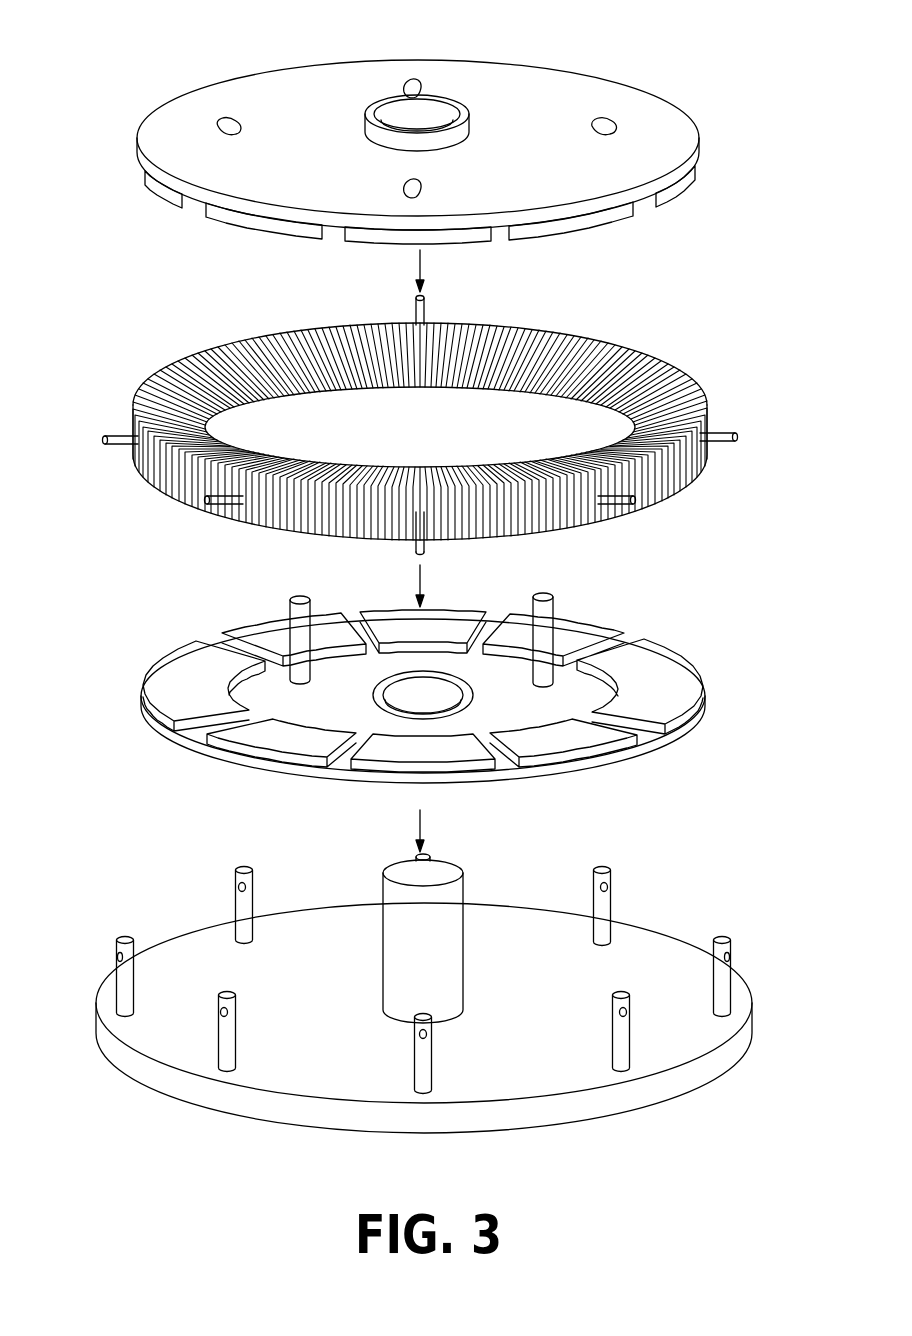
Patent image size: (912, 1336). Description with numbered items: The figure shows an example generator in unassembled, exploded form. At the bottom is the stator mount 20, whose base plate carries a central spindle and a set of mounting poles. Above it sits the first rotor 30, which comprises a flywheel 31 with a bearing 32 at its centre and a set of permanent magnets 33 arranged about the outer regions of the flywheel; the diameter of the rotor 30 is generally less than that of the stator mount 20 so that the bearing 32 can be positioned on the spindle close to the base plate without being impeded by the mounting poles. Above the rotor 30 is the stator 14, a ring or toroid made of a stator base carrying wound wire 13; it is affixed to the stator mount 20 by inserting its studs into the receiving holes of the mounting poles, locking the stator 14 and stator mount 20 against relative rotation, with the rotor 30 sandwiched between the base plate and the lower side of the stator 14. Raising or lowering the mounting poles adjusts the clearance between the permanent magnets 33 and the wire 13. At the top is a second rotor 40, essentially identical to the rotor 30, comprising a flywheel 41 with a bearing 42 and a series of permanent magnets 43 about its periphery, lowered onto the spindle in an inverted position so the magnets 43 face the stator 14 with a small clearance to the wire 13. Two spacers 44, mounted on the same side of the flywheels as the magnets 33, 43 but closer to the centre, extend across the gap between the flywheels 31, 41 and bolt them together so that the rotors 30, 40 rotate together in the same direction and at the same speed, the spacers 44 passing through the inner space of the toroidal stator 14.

The wound wire 13 is at (521, 330).
The stator 14 is at (424, 409).
The stator mount 20 is at (660, 895).
The rotor 30 is at (433, 690).
The flywheel 31 is at (525, 708).
The bearing 32 is at (160, 702).
The permanent magnets 33 is at (385, 748).
The second rotor 40 is at (443, 151).
The flywheel 41 is at (541, 130).
The bearing 42 is at (368, 124).
The permanent magnets 43 is at (360, 243).
The spacers 44 is at (296, 610).